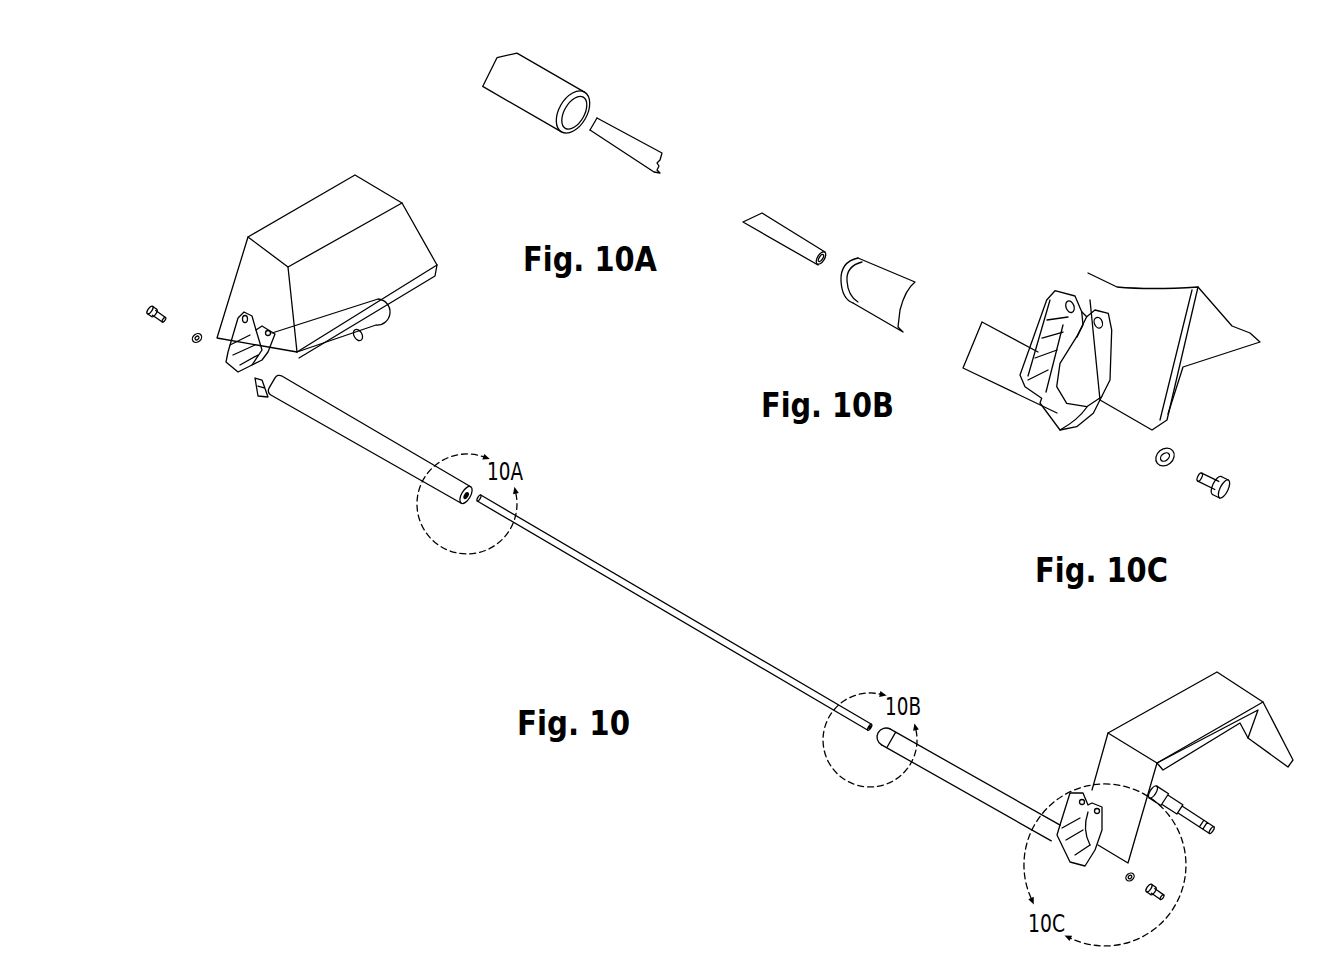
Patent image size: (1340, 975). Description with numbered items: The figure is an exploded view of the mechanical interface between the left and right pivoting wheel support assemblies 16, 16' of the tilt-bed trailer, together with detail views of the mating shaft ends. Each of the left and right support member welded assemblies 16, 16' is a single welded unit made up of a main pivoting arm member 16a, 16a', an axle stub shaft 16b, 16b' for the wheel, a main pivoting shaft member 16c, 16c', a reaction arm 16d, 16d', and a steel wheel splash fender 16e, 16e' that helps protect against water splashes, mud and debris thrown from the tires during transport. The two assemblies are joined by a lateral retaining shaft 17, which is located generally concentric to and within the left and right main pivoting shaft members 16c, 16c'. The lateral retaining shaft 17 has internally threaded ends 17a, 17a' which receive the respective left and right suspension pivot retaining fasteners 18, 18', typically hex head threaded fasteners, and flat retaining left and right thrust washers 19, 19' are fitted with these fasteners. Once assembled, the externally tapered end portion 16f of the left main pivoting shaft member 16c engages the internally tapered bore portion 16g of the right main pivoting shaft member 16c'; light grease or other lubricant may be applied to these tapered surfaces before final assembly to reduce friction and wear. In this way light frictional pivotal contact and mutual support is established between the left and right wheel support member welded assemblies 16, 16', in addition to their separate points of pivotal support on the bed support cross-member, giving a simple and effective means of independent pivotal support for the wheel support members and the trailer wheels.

In FIG. 10, the left support member welded assembly 16 is at (897, 891).
In FIG. 10, the right support member welded assembly 16' is at (202, 470).
In FIG. 10, the main pivoting arm member 16a is at (1177, 809).
In FIG. 10C, the main pivoting arm member 16a is at (1232, 350).
In FIG. 10, the main pivoting arm member 16a' is at (351, 353).
In FIG. 10, the axle stub shaft 16b is at (1221, 810).
In FIG. 10, the axle stub shaft 16b' is at (404, 349).
In FIG. 10, the main pivoting shaft member 16c is at (971, 785).
In FIG. 10B, the main pivoting shaft member 16c is at (933, 279).
In FIG. 10C, the main pivoting shaft member 16c is at (1010, 405).
In FIG. 10, the main pivoting shaft member 16c' is at (371, 439).
In FIG. 10A, the main pivoting shaft member 16c' is at (561, 80).
In FIG. 10, the reaction arm 16d is at (1046, 800).
In FIG. 10C, the reaction arm 16d is at (1074, 317).
In FIG. 10, the reaction arm 16d' is at (221, 311).
In FIG. 10, the wheel splash fender 16e is at (1218, 711).
In FIG. 10C, the wheel splash fender 16e is at (1166, 338).
In FIG. 10, the wheel splash fender 16e' is at (345, 258).
In FIG. 10, the externally tapered end portion 16f is at (851, 769).
In FIG. 10, the internally tapered bore portion 16g is at (429, 529).
In FIG. 10A, the internally tapered bore portion 16g is at (554, 128).
In FIG. 10, the lateral retaining shaft 17 is at (674, 612).
In FIG. 10A, the lateral retaining shaft 17 is at (687, 138).
In FIG. 10B, the lateral retaining shaft 17 is at (793, 192).
In FIG. 10B, the internally threaded end 17a is at (875, 233).
In FIG. 10A, the internally threaded end 17a' is at (648, 93).
In FIG. 10, the suspension pivot retaining fastener 18 is at (1136, 910).
In FIG. 10C, the suspension pivot retaining fastener 18 is at (1199, 503).
In FIG. 10, the suspension pivot retaining fastener 18' is at (128, 330).
In FIG. 10, the thrust washer 19 is at (1103, 892).
In FIG. 10C, the thrust washer 19 is at (1140, 473).
In FIG. 10, the thrust washer 19' is at (163, 360).